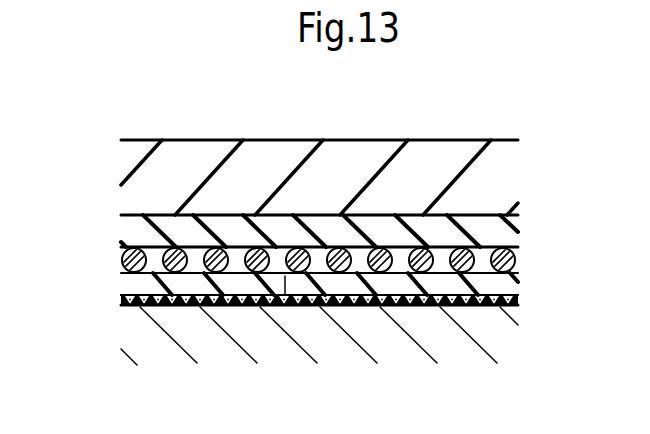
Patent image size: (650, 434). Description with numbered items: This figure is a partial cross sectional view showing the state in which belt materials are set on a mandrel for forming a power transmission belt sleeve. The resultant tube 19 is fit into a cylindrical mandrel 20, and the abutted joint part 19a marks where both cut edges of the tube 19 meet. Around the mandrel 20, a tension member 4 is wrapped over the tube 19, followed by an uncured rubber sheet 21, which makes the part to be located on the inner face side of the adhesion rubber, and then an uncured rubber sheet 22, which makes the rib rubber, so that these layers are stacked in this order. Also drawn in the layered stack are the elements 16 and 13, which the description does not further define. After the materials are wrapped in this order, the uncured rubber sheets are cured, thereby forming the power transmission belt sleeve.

The uncured rubber sheet 22 is at (127, 191).
The uncured rubber sheet 21 is at (127, 225).
The tension member 4 is at (117, 266).
The binder layer 16 is at (498, 287).
The porous layer 13 is at (512, 300).
The tube 19 is at (119, 292).
The abutted joint part 19a is at (287, 283).
The cylindrical mandrel 20 is at (495, 333).